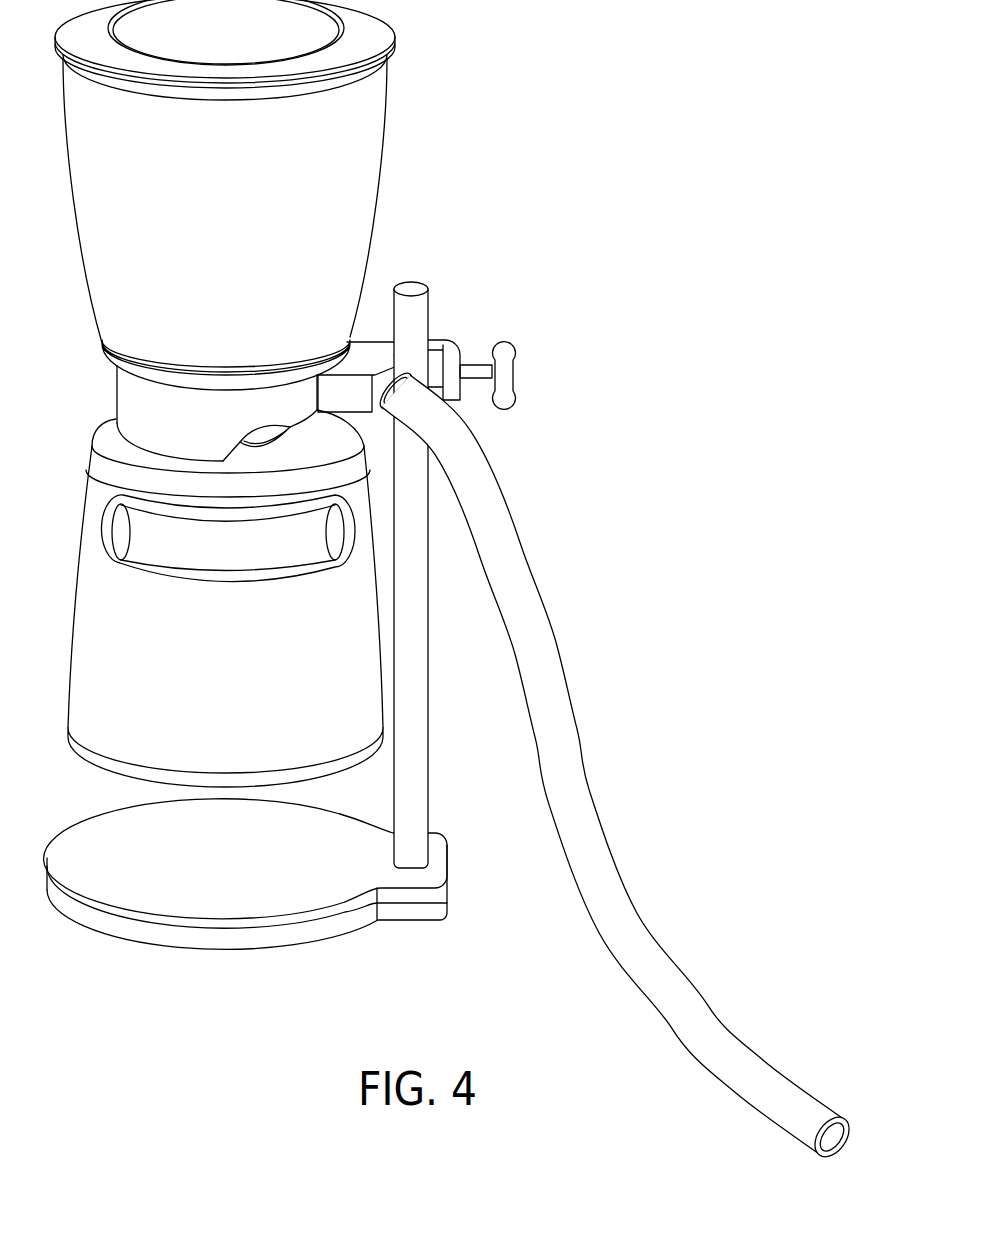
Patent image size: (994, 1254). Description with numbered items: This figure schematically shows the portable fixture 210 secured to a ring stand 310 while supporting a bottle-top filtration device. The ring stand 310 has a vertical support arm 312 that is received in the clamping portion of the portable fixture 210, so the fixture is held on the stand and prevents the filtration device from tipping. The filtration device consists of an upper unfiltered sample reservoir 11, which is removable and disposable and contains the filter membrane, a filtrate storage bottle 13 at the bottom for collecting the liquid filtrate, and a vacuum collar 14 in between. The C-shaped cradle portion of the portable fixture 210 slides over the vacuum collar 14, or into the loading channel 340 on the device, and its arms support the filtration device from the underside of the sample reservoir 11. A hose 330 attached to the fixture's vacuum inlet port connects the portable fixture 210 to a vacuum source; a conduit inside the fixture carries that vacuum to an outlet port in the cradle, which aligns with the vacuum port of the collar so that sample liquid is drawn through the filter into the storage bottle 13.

The upper unfiltered sample reservoir 11 is at (238, 241).
The vacuum collar 14 is at (117, 397).
The loading channel 340 is at (263, 430).
The filtrate storage bottle 13 is at (242, 689).
The ring stand 310 is at (257, 874).
The support arm 312 is at (428, 788).
The portable fixture 210 is at (369, 347).
The hose 330 is at (588, 792).